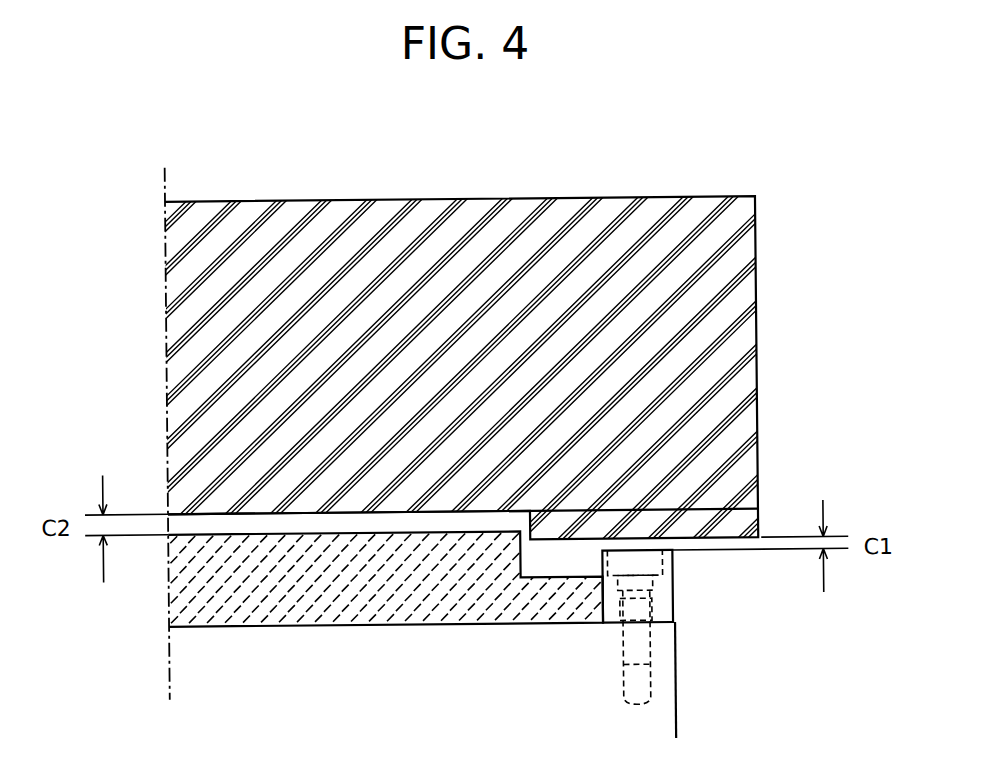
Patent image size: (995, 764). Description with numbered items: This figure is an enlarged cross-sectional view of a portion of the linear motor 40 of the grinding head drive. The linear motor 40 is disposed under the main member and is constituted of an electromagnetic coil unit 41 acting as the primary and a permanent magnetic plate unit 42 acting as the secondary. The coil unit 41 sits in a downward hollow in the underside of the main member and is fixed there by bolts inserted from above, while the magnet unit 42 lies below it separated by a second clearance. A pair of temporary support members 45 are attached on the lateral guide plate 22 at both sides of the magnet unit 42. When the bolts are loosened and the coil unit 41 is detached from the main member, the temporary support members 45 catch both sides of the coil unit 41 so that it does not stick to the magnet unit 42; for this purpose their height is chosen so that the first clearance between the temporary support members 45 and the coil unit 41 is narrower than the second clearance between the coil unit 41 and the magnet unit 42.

The linear motor 40 is at (774, 241).
The electromagnetic coil unit 41 is at (452, 242).
The permanent magnetic plate unit 42 is at (391, 606).
The temporary support member 45 is at (661, 594).
The lateral guide plate 22 is at (662, 678).